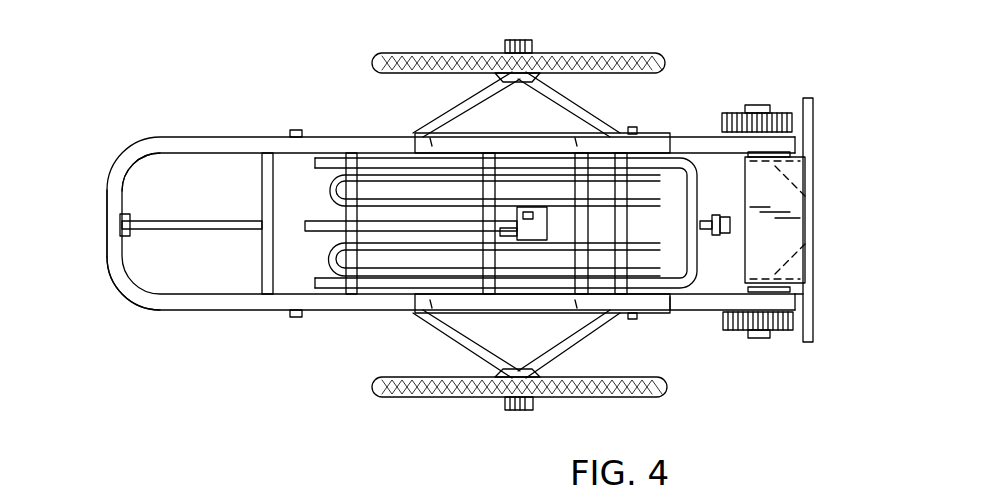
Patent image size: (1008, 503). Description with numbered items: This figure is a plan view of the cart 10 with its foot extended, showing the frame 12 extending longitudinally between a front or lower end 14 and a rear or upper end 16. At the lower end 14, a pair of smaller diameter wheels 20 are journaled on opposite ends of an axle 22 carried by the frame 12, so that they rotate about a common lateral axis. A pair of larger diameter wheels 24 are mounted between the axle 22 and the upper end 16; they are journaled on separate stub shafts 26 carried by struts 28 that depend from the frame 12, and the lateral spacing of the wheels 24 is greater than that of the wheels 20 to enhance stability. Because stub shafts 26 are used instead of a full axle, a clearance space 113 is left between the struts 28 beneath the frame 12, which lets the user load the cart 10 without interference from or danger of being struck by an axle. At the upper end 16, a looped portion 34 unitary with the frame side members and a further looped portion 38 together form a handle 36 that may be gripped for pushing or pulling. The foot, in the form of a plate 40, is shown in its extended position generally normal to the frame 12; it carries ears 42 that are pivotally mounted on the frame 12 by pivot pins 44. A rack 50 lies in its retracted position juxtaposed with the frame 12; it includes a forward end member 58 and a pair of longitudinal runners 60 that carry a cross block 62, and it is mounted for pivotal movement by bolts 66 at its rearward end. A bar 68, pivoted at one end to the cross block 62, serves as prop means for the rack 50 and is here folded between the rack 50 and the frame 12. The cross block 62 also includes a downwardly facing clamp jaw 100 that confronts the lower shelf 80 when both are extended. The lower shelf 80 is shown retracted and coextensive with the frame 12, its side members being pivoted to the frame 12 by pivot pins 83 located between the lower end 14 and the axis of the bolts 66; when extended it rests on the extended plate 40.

The cart 10 is at (118, 146).
The frame 12 is at (230, 310).
The front or lower end 14 is at (810, 292).
The rear or upper end 16 is at (118, 212).
The smaller diameter wheels 20 is at (735, 334).
The axle 22 is at (762, 340).
The larger diameter wheels 24 is at (616, 54).
The stub shafts 26 is at (512, 40).
The struts 28 is at (442, 114).
The looped portion 34 is at (108, 260).
The handle 36 is at (130, 312).
The further looped portion 38 is at (182, 230).
The plate 40 is at (812, 108).
The ears 42 is at (800, 182).
The pivot pins 44 is at (782, 150).
The rack 50 is at (669, 300).
The forward end member 58 is at (692, 196).
The longitudinal runners 60 is at (452, 190).
The cross block 62 is at (526, 208).
The bolts 66 is at (296, 318).
The bar 68 is at (323, 221).
The lower shelf 80 is at (572, 140).
The pivot pins 83 is at (634, 128).
The clamp jaw 100 is at (548, 219).
The clearance space 113 is at (545, 294).